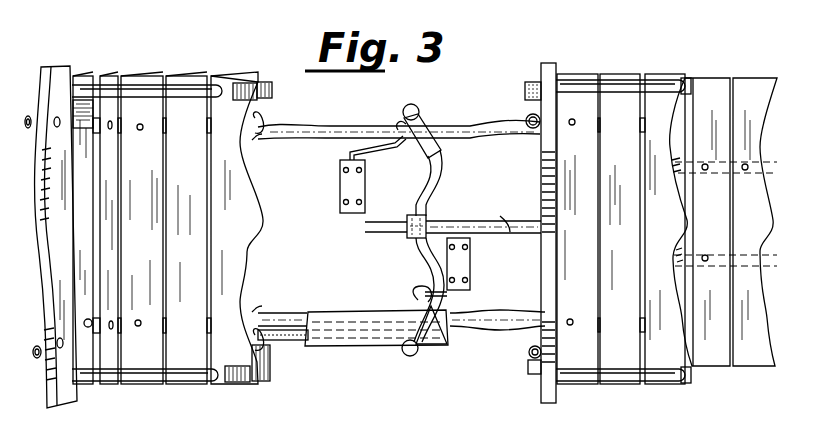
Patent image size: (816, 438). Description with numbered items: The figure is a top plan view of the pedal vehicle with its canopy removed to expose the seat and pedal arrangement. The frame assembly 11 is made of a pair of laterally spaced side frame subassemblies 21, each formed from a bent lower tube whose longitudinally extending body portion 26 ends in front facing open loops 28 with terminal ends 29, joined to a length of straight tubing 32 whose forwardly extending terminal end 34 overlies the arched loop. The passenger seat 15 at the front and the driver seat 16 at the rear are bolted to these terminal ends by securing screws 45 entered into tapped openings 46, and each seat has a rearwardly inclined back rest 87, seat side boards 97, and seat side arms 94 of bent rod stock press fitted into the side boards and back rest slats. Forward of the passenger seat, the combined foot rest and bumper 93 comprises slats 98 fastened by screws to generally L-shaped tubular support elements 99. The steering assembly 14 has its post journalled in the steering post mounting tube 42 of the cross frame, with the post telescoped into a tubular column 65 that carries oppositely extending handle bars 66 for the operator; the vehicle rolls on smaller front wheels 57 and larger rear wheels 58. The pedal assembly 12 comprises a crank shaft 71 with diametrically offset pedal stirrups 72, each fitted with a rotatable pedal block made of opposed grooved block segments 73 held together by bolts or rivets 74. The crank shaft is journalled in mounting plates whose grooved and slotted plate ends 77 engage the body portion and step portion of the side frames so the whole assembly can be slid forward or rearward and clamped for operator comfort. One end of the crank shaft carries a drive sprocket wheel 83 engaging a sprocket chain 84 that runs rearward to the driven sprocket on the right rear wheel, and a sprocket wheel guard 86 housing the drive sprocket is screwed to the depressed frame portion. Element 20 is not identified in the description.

The driver seat 16 is at (128, 72).
The passenger seat 15 is at (642, 70).
The seat side arms 94 is at (150, 88).
The seat side boards 97 is at (238, 84).
The rear wheel 58 is at (262, 82).
The straight tubing length 32 is at (210, 124).
The forwardly extending terminal end 34 is at (644, 122).
The terminal ends of open loops 29 is at (262, 120).
The longitudinally extending body portion 26 is at (252, 142).
The frame assembly 11 is at (310, 126).
The side frame subassemblies 21 is at (310, 138).
The grooved plate ends 77 is at (398, 127).
The handle bars 66 is at (426, 120).
The front wheel 57 is at (528, 84).
The tubular support elements 99 is at (694, 164).
The front facing open loops 28 is at (85, 132).
The securing screws 45 is at (143, 130).
The pedal stirrups 72 is at (348, 152).
The bolts or rivets 74 is at (405, 225).
The block segments 73 is at (338, 192).
The steering assembly 14 is at (490, 220).
The steering post mounting tube 42 is at (600, 220).
The pedal assembly 12 is at (350, 230).
The crank shaft 71 is at (395, 228).
The tubular column 65 is at (510, 228).
The sprocket wheel guard 86 is at (448, 340).
The drive sprocket wheel 83 is at (402, 348).
The sprocket chain 84 is at (306, 342).
The back rests 87 is at (72, 400).
The tapped openings 46 is at (219, 430).
The panel 20 is at (255, 430).
The foot rest slats 98 is at (720, 348).
The combined foot rest and bumper 93 is at (758, 354).